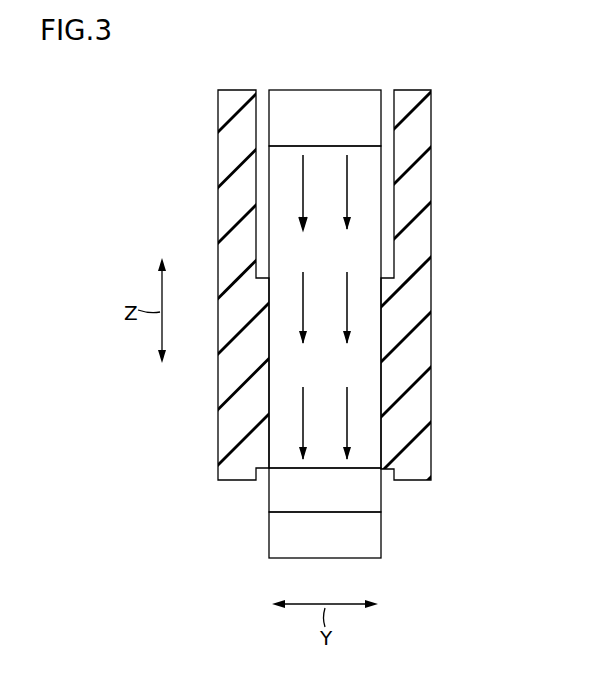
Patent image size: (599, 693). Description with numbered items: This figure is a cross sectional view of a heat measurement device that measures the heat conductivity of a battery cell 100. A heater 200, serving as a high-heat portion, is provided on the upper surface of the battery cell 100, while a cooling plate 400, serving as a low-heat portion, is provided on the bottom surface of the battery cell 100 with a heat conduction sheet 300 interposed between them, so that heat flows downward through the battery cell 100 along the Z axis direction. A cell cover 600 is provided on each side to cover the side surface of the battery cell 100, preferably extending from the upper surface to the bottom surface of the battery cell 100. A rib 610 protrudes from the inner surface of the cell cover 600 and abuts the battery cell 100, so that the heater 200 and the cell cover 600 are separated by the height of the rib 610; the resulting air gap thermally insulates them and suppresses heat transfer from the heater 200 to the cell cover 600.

The battery cell 100 is at (365, 316).
The heater 200 is at (323, 104).
The heat conduction sheet 300 is at (368, 498).
The cooling plate 400 is at (368, 537).
The cell cover 600 is at (228, 168).
The rib 610 is at (267, 410).